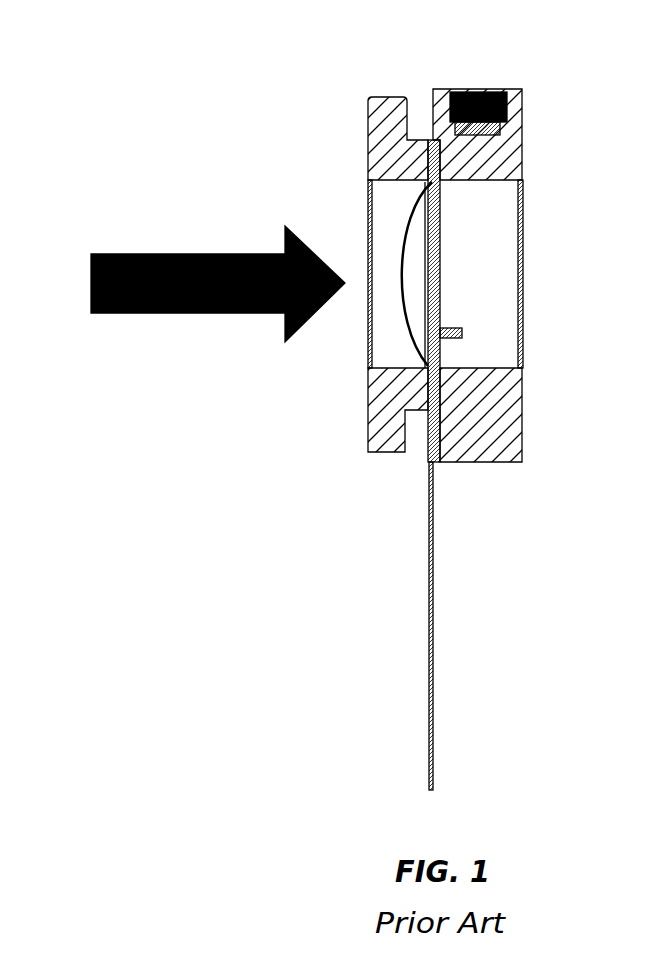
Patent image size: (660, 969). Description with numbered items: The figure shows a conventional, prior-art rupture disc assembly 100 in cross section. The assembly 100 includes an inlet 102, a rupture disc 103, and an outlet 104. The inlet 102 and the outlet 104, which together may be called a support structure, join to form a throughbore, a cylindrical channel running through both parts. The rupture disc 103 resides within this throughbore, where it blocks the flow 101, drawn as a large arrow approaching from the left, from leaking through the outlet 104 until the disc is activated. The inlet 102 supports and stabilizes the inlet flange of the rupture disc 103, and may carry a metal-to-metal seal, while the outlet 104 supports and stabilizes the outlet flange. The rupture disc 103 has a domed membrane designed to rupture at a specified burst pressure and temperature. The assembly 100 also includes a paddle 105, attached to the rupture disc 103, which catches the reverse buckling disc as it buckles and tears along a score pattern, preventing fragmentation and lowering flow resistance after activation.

The rupture disc assembly 100 is at (445, 402).
The flow 101 is at (197, 284).
The inlet 102 is at (367, 135).
The rupture disc 103 is at (405, 307).
The outlet 104 is at (523, 150).
The paddle 105 is at (455, 328).